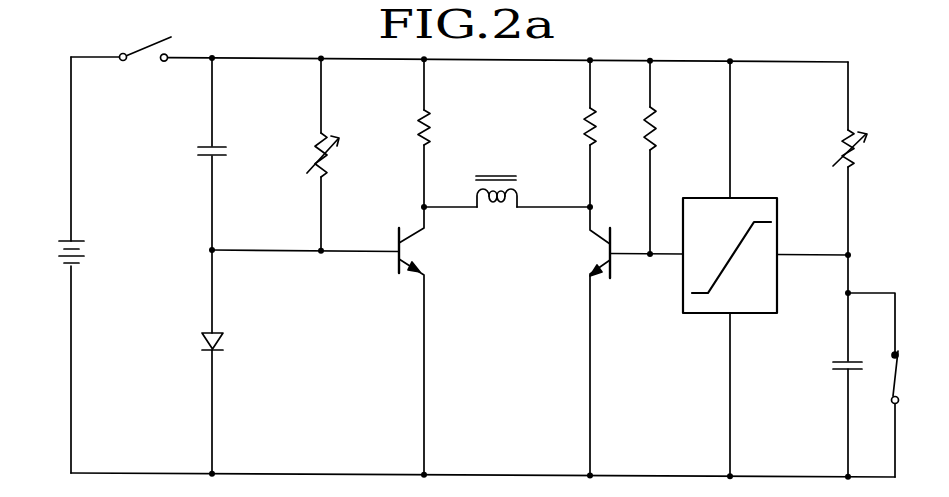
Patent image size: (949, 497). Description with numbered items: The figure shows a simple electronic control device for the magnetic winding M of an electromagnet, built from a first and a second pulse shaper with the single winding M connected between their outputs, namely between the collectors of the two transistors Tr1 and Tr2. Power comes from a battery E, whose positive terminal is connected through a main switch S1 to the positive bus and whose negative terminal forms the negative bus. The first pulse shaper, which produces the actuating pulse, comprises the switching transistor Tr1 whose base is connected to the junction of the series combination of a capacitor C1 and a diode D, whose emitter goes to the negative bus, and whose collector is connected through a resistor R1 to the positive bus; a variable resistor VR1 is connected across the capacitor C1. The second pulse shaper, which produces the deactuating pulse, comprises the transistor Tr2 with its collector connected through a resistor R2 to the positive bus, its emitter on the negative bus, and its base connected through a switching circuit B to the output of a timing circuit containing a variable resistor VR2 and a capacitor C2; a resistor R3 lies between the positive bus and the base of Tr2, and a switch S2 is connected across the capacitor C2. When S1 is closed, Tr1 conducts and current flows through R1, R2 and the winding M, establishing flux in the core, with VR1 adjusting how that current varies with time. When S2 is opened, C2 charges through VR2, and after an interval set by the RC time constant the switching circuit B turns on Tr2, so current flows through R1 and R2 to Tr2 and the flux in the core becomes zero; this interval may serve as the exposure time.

The main switch S1 is at (146, 38).
The battery E is at (83, 254).
The capacitor C1 is at (199, 154).
The variable resistor VR1 is at (304, 155).
The diode D is at (204, 362).
The resistor R1 is at (437, 133).
The magnetic winding M is at (496, 178).
The switching transistor Tr1 is at (425, 341).
The resistor R2 is at (601, 133).
The resistor R3 is at (662, 157).
The transistor Tr2 is at (587, 341).
The switching circuit B is at (730, 255).
The variable resistor VR2 is at (833, 158).
The capacitor C2 is at (836, 366).
The switch S2 is at (887, 385).